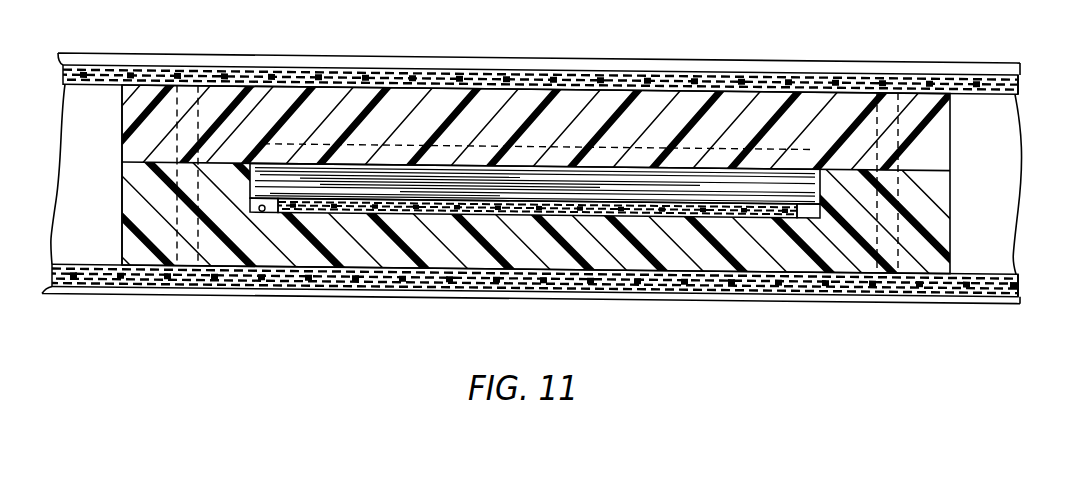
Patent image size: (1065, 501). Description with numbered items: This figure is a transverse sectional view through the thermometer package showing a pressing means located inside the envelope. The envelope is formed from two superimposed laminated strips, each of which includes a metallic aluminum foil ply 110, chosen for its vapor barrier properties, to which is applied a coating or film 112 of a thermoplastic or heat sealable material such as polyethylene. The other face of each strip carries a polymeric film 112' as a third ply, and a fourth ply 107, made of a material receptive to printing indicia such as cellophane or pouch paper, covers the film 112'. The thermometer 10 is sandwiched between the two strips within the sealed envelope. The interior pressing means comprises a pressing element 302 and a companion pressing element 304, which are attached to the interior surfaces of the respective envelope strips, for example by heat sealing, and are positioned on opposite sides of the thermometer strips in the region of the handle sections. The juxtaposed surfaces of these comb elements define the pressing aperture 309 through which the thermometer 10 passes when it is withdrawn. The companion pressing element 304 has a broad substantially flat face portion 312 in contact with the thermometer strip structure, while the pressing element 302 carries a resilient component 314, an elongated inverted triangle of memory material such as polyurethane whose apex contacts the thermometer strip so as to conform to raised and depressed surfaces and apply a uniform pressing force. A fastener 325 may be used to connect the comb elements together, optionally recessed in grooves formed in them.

The thermometer 10 is at (432, 218).
The fourth ply 107 is at (800, 72).
The aluminum foil ply 110 is at (968, 78).
The coating or film of heat sealable material 112 is at (997, 185).
The polymeric film 112' is at (1022, 185).
The pressing element 302 is at (121, 100).
The companion pressing element 304 is at (121, 233).
The pressing aperture 309 is at (808, 213).
The flat face portion 312 is at (263, 213).
The resilient component 314 is at (533, 192).
The fastener 325 is at (200, 100).